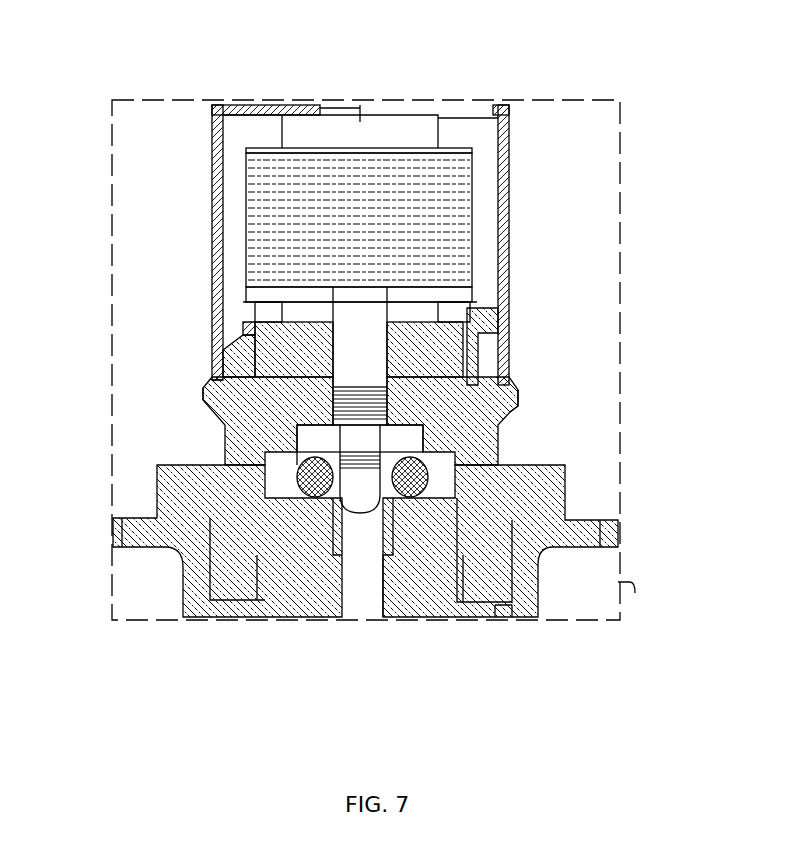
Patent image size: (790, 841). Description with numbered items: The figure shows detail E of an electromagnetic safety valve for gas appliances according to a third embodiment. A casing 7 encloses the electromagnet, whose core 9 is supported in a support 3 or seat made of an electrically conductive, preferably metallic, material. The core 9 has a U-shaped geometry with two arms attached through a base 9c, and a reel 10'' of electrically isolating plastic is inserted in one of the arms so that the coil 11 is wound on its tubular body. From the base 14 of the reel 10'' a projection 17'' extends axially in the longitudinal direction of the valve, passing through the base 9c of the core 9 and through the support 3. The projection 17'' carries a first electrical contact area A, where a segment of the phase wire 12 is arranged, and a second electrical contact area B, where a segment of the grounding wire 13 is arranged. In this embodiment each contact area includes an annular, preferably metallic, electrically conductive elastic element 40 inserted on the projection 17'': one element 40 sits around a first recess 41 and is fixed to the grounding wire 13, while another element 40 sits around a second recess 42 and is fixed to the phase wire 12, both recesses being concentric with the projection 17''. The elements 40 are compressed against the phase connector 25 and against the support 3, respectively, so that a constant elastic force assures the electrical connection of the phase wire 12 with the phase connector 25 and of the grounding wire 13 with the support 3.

The casing 7 is at (507, 160).
The core 9 is at (302, 133).
The base of the core 9c is at (463, 323).
The reel 10'' is at (471, 225).
The coil 11 is at (420, 190).
The phase wire 12 is at (358, 520).
The grounding wire 13 is at (400, 372).
The base of the reel 14 is at (263, 294).
The projection 17'' is at (212, 350).
The phase connector 25 is at (390, 600).
The support 3 is at (478, 393).
The electrically conductive elastic element 40 is at (513, 408).
The first recess 41 is at (330, 386).
The second recess 42 is at (330, 450).
The first electrical contact area A is at (420, 478).
The second electrical contact area B is at (203, 402).
The detail E is at (644, 591).